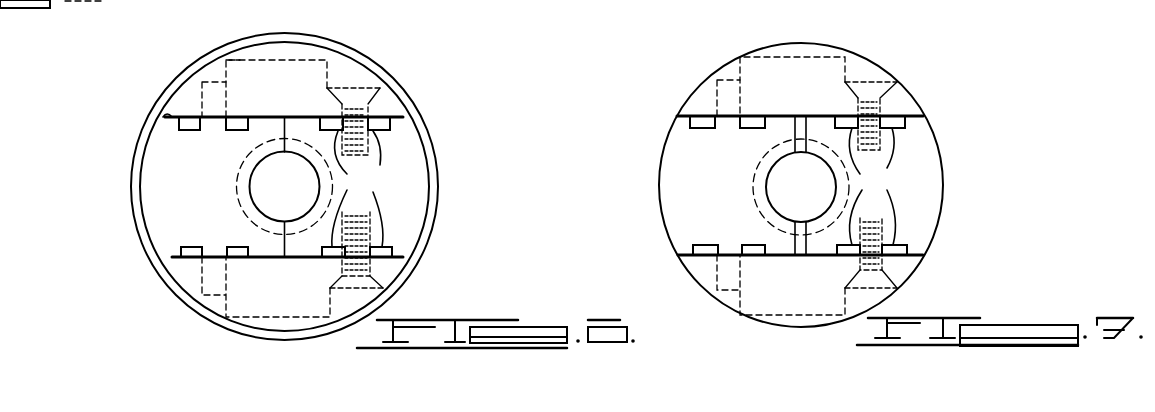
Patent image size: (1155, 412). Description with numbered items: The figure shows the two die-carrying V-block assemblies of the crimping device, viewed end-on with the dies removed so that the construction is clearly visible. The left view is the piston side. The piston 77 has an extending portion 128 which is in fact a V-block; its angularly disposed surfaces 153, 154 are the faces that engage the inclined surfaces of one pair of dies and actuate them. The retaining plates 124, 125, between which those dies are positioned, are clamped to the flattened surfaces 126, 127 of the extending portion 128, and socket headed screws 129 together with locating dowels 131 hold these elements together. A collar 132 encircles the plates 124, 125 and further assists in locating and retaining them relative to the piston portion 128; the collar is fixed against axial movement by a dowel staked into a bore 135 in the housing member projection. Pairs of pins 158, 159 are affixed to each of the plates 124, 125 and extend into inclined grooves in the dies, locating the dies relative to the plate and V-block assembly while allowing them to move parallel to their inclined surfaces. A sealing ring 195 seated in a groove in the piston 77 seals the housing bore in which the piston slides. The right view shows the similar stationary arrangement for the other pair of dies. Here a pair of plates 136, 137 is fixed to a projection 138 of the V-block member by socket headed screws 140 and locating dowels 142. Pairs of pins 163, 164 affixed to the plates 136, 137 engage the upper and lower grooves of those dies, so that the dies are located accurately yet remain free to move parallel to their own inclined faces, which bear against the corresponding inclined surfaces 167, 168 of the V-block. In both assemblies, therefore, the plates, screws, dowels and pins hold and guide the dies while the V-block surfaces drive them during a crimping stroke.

In FIG. 6, the piston 77 is at (357, 57).
In FIG. 6, the retaining plate 124 is at (280, 73).
In FIG. 6, the retaining plate 125 is at (188, 277).
In FIG. 6, the flattened surface 126 is at (168, 113).
In FIG. 6, the flattened surface 127 is at (172, 261).
In FIG. 6, the extending portion of the piston 128 is at (142, 208).
In FIG. 6, the socket headed screw 129 is at (382, 86).
In FIG. 6, the locating dowel 131 is at (207, 98).
In FIG. 6, the collar 132 is at (436, 140).
In FIG. 7, the bore 135 is at (812, 43).
In FIG. 7, the plate 136 is at (900, 97).
In FIG. 7, the plate 137 is at (905, 268).
In FIG. 7, the projection of the V-block member 138 is at (660, 212).
In FIG. 7, the socket headed screw 140 is at (868, 83).
In FIG. 7, the locating dowel 142 is at (720, 95).
In FIG. 6, the angularly disposed surface 153 is at (167, 182).
In FIG. 6, the angularly disposed surface 154 is at (410, 183).
In FIG. 6, the pin 158 is at (232, 130).
In FIG. 6, the pin 159 is at (361, 189).
In FIG. 7, the pin 163 is at (808, 221).
In FIG. 7, the pin 164 is at (743, 128).
In FIG. 7, the inclined surface 167 is at (903, 172).
In FIG. 7, the inclined surface 168 is at (678, 172).
In FIG. 7, the sealing ring 195 is at (1057, 4).